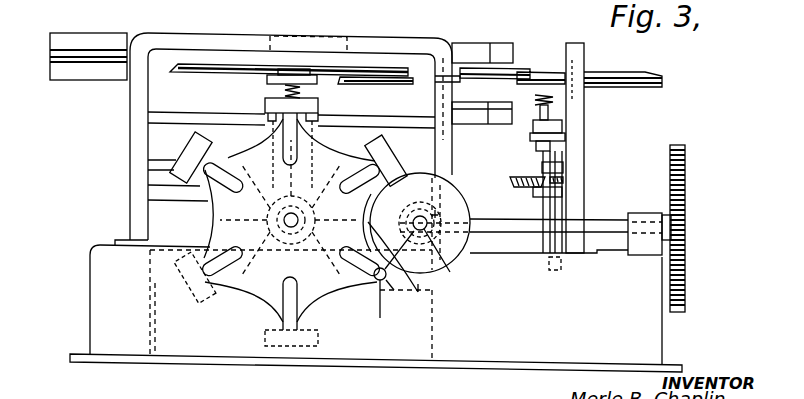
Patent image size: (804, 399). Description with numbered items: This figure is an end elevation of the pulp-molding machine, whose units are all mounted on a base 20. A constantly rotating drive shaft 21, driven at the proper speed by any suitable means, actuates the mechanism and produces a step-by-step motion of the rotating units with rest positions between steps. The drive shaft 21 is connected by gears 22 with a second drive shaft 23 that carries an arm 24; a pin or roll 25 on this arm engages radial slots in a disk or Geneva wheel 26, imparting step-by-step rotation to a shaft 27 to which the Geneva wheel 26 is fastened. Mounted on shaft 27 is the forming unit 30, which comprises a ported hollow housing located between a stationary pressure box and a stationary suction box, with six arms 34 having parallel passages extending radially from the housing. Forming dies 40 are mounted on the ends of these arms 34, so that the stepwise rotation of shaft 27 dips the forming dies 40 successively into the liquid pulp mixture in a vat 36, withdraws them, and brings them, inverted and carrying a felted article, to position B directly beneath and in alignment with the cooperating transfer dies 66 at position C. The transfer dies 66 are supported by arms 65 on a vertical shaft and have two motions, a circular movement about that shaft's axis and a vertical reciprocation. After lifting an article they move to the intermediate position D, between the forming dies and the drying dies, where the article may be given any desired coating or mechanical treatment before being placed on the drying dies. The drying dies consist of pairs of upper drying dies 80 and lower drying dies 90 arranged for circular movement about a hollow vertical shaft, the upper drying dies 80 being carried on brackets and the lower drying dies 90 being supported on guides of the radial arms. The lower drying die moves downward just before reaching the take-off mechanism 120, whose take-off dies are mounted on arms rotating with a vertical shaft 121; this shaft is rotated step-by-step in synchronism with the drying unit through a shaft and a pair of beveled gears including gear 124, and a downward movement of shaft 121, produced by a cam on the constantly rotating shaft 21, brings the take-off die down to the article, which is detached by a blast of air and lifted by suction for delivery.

The base 20 is at (102, 298).
The drive shaft 21 is at (608, 220).
The gears 22 is at (440, 183).
The second drive shaft 23 is at (449, 271).
The arm 24 is at (392, 290).
The pin or roll 25 is at (373, 305).
The Geneva wheel 26 is at (262, 279).
The shaft 27 is at (283, 220).
The forming unit 30 is at (299, 182).
The arms 34 is at (208, 156).
The vat 36 is at (436, 337).
The forming dies 40 is at (267, 99).
The arms 65 is at (380, 70).
The transfer dies 66 is at (305, 75).
The upper drying dies 80 is at (61, 50).
The lower drying dies 90 is at (58, 66).
The take-off mechanism 120 is at (647, 61).
The vertical shaft 121 is at (546, 112).
The beveled gear 124 is at (525, 176).
The position B is at (318, 104).
The position C is at (328, 75).
The position D is at (370, 85).